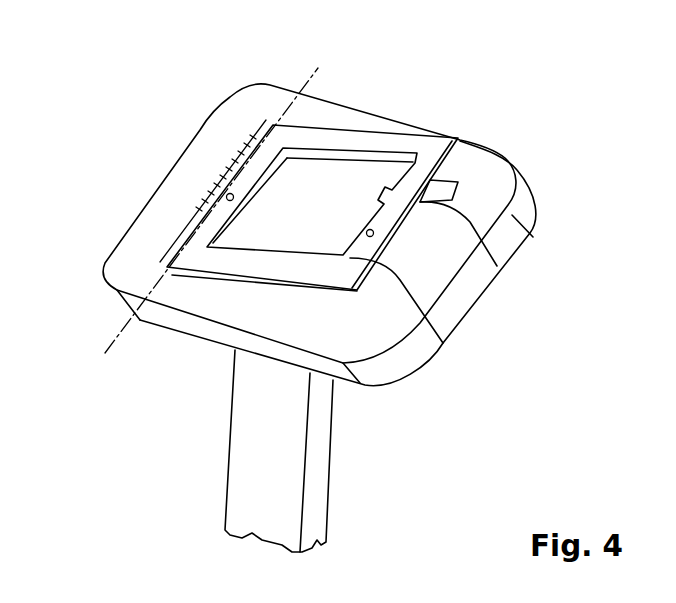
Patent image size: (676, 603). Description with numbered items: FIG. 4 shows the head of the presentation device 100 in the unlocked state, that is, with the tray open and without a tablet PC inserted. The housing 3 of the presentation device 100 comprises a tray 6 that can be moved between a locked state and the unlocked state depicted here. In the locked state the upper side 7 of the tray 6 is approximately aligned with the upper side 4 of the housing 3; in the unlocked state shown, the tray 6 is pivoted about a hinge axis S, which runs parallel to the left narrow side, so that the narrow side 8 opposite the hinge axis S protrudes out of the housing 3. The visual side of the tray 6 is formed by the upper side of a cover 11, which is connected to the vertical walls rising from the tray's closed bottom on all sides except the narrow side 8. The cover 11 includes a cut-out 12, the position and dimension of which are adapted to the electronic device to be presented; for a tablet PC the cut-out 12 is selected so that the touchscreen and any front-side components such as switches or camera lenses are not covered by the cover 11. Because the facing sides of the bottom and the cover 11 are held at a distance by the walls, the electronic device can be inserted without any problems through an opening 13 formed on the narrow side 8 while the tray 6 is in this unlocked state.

The presentation device 100 is at (156, 91).
The housing 3 is at (466, 298).
The upper side 4 is at (497, 153).
The tray 6 is at (430, 157).
The upper side 7 is at (357, 144).
The narrow side 8 is at (482, 181).
The cover 11 is at (447, 343).
The cut-out 12 is at (303, 200).
The opening 13 is at (497, 266).
The hinge axis S is at (105, 353).